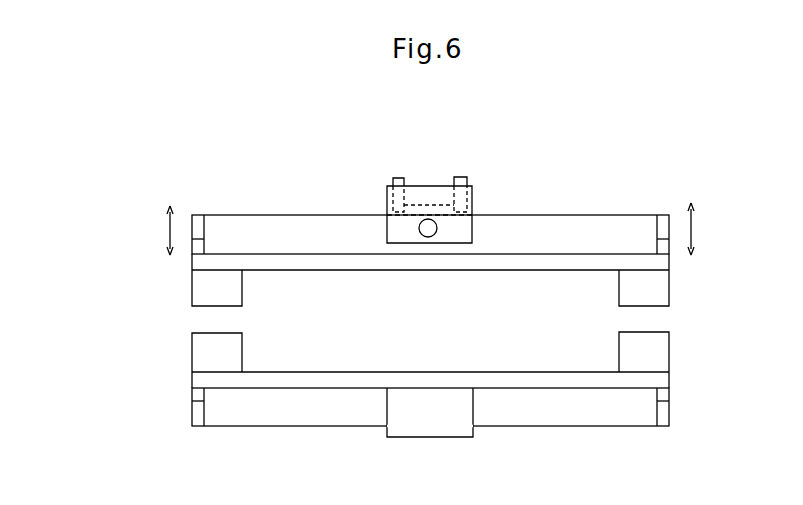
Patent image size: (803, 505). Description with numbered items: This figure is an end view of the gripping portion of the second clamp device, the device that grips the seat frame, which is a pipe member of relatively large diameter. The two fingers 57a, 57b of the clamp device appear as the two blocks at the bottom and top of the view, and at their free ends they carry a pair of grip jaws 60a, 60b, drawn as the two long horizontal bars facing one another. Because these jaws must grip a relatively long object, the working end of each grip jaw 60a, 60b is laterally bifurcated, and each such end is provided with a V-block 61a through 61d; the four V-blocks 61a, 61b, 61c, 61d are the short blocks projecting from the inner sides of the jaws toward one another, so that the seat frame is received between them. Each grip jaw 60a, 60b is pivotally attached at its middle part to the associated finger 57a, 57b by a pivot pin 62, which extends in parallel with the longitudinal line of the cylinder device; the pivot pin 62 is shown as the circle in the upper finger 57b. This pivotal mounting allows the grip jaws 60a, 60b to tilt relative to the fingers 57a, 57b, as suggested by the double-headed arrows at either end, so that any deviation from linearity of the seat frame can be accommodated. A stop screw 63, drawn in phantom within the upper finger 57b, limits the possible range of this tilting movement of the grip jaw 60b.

The grip jaw 60a is at (587, 426).
The grip jaw 60b is at (622, 215).
The V-block 61a is at (194, 358).
The V-block 61b is at (667, 355).
The V-block 61c is at (195, 294).
The V-block 61d is at (669, 289).
The finger 57a is at (423, 437).
The finger 57b is at (432, 186).
The pivot pin 62 is at (436, 234).
The stop screw 63 is at (397, 178).